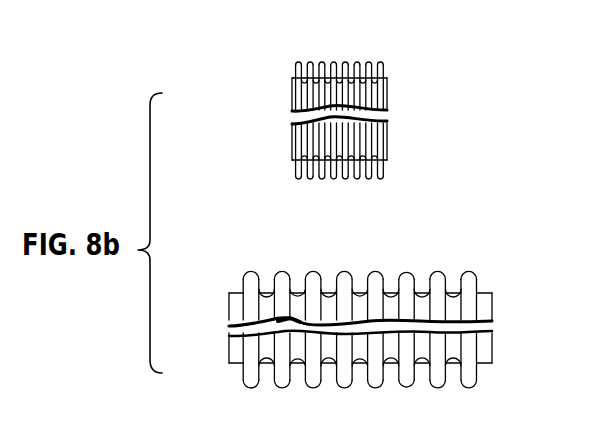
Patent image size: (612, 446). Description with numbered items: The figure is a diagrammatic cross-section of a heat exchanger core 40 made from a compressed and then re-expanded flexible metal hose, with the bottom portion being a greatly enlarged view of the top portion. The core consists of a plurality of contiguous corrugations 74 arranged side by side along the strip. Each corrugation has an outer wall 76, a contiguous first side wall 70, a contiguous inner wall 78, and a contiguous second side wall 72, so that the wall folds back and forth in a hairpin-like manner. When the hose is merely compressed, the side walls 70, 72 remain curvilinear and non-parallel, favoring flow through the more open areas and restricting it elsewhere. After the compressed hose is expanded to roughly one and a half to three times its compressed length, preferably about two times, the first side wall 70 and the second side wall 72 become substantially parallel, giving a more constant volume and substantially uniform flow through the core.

The corrugated fin assembly 40 is at (415, 188).
The first side wall 70 is at (296, 62).
The second side wall 72 is at (385, 70).
The corrugations 74 is at (368, 61).
The outer wall 76 is at (301, 61).
The inner wall 78 is at (266, 278).